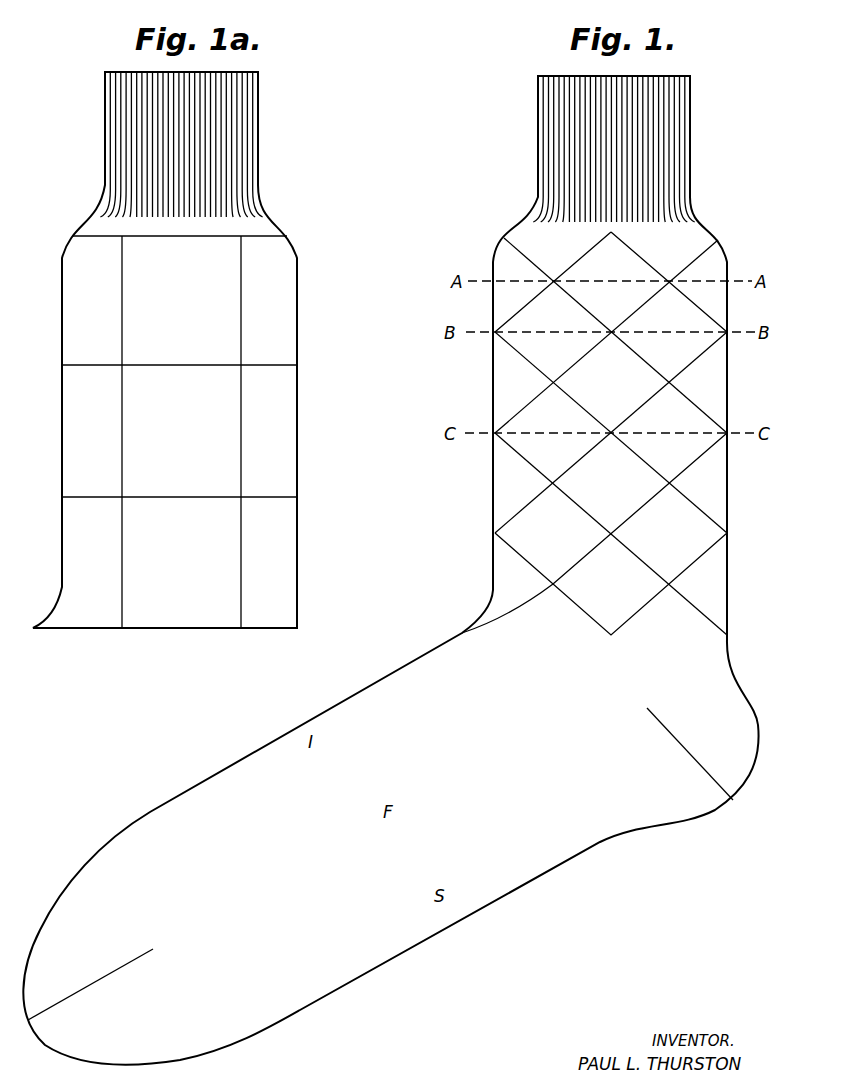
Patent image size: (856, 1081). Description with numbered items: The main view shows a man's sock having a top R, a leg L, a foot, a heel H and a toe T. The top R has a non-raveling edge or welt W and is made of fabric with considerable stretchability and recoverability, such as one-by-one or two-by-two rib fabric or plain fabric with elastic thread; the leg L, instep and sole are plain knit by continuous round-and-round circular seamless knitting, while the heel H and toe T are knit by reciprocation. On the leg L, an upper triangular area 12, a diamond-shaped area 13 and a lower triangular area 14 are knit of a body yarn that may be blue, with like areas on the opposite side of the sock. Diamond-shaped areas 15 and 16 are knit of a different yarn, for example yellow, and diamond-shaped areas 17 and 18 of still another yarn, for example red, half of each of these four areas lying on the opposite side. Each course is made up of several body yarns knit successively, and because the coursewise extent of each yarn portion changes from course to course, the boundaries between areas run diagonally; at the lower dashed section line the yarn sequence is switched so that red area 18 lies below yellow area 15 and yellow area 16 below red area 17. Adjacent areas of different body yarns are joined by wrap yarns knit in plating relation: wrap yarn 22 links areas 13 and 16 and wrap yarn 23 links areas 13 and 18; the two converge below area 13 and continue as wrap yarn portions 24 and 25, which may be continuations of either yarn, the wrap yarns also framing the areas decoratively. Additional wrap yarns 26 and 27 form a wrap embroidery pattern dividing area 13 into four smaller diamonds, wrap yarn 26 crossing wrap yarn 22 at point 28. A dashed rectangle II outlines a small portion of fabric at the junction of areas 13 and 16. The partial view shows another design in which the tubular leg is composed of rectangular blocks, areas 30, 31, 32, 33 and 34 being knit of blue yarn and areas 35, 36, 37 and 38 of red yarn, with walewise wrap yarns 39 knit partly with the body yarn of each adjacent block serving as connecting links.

In FIG. 1, the triangular area 12 is at (624, 273).
In FIG. 1, the diamond-shaped area 13 is at (631, 388).
In FIG. 1, the triangular area 14 is at (605, 602).
In FIG. 1, the diamond-shaped area 15 is at (545, 337).
In FIG. 1, the diamond-shaped area 16 is at (690, 554).
In FIG. 1, the diamond-shaped area 17 is at (690, 353).
In FIG. 1, the diamond-shaped area 18 is at (511, 483).
In FIG. 1, the wrap yarn 22 is at (640, 509).
In FIG. 1, the wrap yarn 23 is at (510, 451).
In FIG. 1, the wrap yarn portion 24 is at (650, 580).
In FIG. 1, the wrap yarn portion 25 is at (566, 568).
In FIG. 1, the wrap yarn 26 is at (561, 391).
In FIG. 1, the wrap yarn 27 is at (648, 401).
In FIG. 1, the point 28 is at (670, 484).
In FIG. 1A, the area 30 is at (71, 318).
In FIG. 1A, the area 31 is at (290, 354).
In FIG. 1A, the area 32 is at (226, 472).
In FIG. 1A, the area 33 is at (70, 546).
In FIG. 1A, the area 34 is at (290, 611).
In FIG. 1A, the area 35 is at (231, 323).
In FIG. 1A, the area 36 is at (69, 431).
In FIG. 1A, the area 37 is at (290, 411).
In FIG. 1A, the area 38 is at (227, 565).
In FIG. 1A, the wrap yarns 39 is at (121, 462).
In FIG. 1, the welt W is at (676, 77).
In FIG. 1, the top R is at (687, 153).
In FIG. 1, the leg L is at (487, 393).
In FIG. 1, the heel H is at (690, 754).
In FIG. 1, the toe T is at (90, 984).
In FIG. 1, the detail area II is at (643, 460).